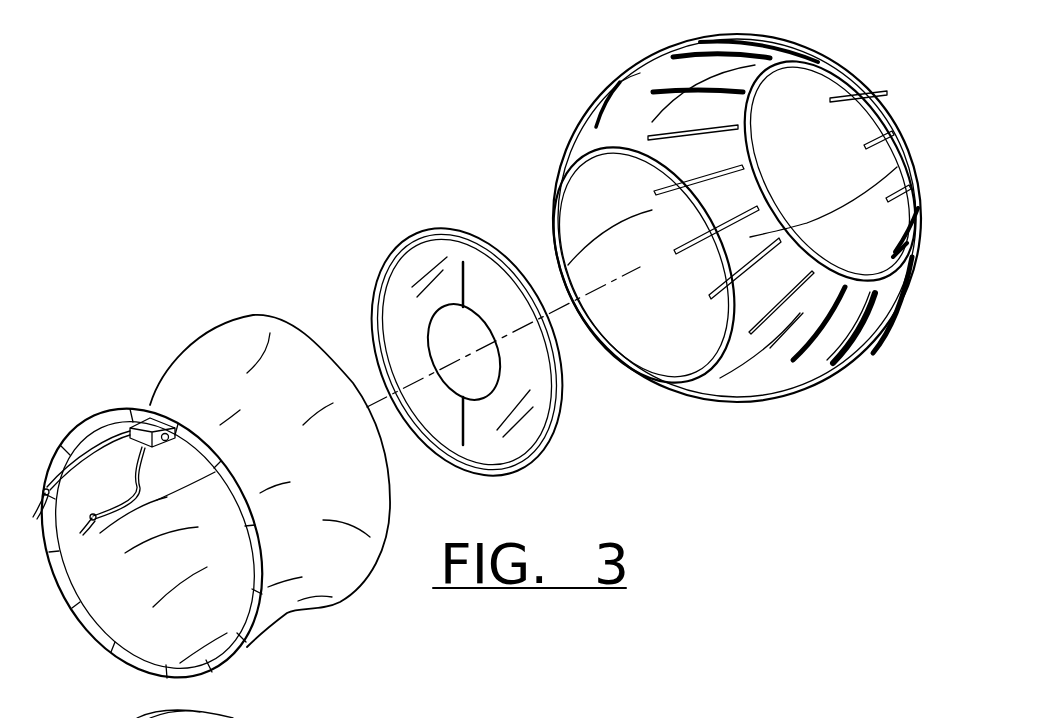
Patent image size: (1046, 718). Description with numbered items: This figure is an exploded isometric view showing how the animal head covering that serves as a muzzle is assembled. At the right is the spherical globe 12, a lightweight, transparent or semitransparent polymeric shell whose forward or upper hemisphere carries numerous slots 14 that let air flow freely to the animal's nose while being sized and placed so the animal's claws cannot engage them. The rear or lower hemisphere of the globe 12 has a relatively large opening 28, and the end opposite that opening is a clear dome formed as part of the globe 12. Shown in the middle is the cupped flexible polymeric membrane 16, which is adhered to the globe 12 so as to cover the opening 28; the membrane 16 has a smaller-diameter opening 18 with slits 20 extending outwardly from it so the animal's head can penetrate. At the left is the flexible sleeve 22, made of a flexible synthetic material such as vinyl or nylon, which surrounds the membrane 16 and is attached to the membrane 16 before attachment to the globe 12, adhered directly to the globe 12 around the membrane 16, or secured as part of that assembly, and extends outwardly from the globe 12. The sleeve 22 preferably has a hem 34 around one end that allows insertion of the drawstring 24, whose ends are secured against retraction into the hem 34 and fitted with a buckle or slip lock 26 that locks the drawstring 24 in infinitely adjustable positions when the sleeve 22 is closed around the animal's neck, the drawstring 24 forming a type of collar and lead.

The globe 12 is at (602, 92).
The slots 14 is at (888, 118).
The flexible polymeric membrane 16 is at (427, 230).
The opening 18 is at (432, 315).
The slits 20 is at (480, 462).
The flexible sleeve 22 is at (250, 315).
The drawstring 24 is at (88, 455).
The slip lock 26 is at (164, 415).
The opening 28 is at (646, 378).
The hem 34 is at (90, 627).